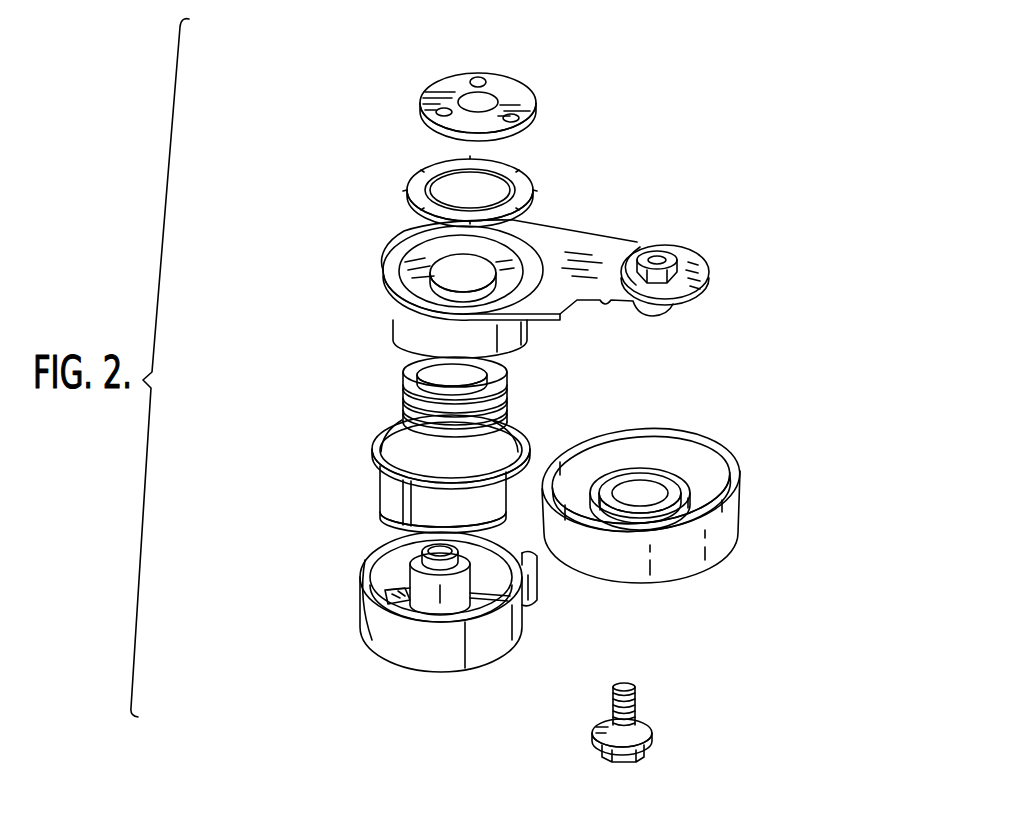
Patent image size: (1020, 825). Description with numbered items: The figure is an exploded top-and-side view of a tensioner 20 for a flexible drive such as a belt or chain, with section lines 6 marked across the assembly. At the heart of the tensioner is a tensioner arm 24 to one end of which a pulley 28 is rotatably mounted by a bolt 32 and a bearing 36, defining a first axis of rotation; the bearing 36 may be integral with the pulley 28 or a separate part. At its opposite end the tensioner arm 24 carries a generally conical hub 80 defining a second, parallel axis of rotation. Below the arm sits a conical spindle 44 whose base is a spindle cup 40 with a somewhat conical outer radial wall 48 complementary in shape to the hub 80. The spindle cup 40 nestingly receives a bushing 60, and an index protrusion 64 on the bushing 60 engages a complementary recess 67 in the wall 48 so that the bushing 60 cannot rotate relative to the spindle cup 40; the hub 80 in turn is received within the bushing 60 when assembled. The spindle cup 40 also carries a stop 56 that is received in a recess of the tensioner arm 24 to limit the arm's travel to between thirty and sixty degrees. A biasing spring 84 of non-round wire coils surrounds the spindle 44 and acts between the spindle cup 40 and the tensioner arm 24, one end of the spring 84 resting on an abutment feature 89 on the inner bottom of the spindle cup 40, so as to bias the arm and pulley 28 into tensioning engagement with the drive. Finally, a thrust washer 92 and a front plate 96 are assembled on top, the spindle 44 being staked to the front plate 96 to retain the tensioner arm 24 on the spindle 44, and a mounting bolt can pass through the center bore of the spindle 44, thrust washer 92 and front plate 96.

The tensioner 20 is at (337, 170).
The section line 6- 6 is at (300, 318).
The front plate 96 is at (452, 75).
The thrust washer 92 is at (420, 178).
The tensioner arm 24 is at (582, 240).
The hub 80 is at (398, 325).
The biasing spring 84 is at (400, 378).
The bushing 60 is at (378, 435).
The index feature or protrusion 64 is at (385, 490).
The spindle cup 40 is at (405, 650).
The conical spindle 44 is at (420, 562).
The outer radial wall 48 is at (425, 548).
The abutment feature 89 is at (385, 600).
The index feature or recess 67 is at (360, 650).
The stop or protrusion 56 is at (537, 588).
The pulley 28 is at (720, 445).
The bearing 36 is at (612, 473).
The bolt 32 is at (650, 732).